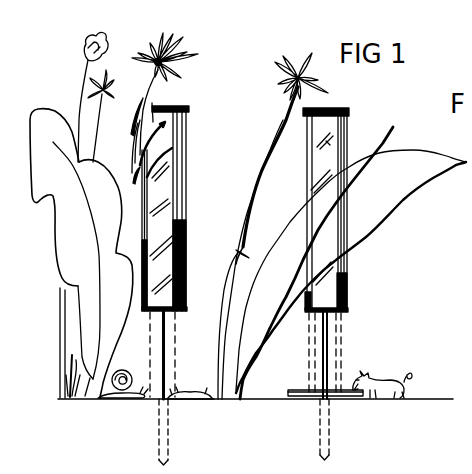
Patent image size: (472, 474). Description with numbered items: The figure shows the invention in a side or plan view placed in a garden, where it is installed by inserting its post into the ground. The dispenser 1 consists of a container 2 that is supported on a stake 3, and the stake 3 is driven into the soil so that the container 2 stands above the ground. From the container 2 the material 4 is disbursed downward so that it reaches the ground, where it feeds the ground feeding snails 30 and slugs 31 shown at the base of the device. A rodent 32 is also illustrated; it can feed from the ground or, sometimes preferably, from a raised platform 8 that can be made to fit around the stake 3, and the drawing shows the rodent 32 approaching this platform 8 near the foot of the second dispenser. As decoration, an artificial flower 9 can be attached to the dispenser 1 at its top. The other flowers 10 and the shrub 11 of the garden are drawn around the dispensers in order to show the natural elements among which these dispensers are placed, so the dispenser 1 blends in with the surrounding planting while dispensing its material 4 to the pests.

The dispenser 1 is at (186, 135).
The container 2 is at (171, 195).
The stake 3 is at (165, 331).
The material 4 is at (175, 348).
The raised platform 8 is at (298, 388).
The artificial flower 9 is at (190, 64).
The flowers 10 is at (85, 43).
The shrub 11 is at (55, 237).
The snails 30 is at (126, 370).
The slugs 31 is at (194, 392).
The rodent 32 is at (380, 378).